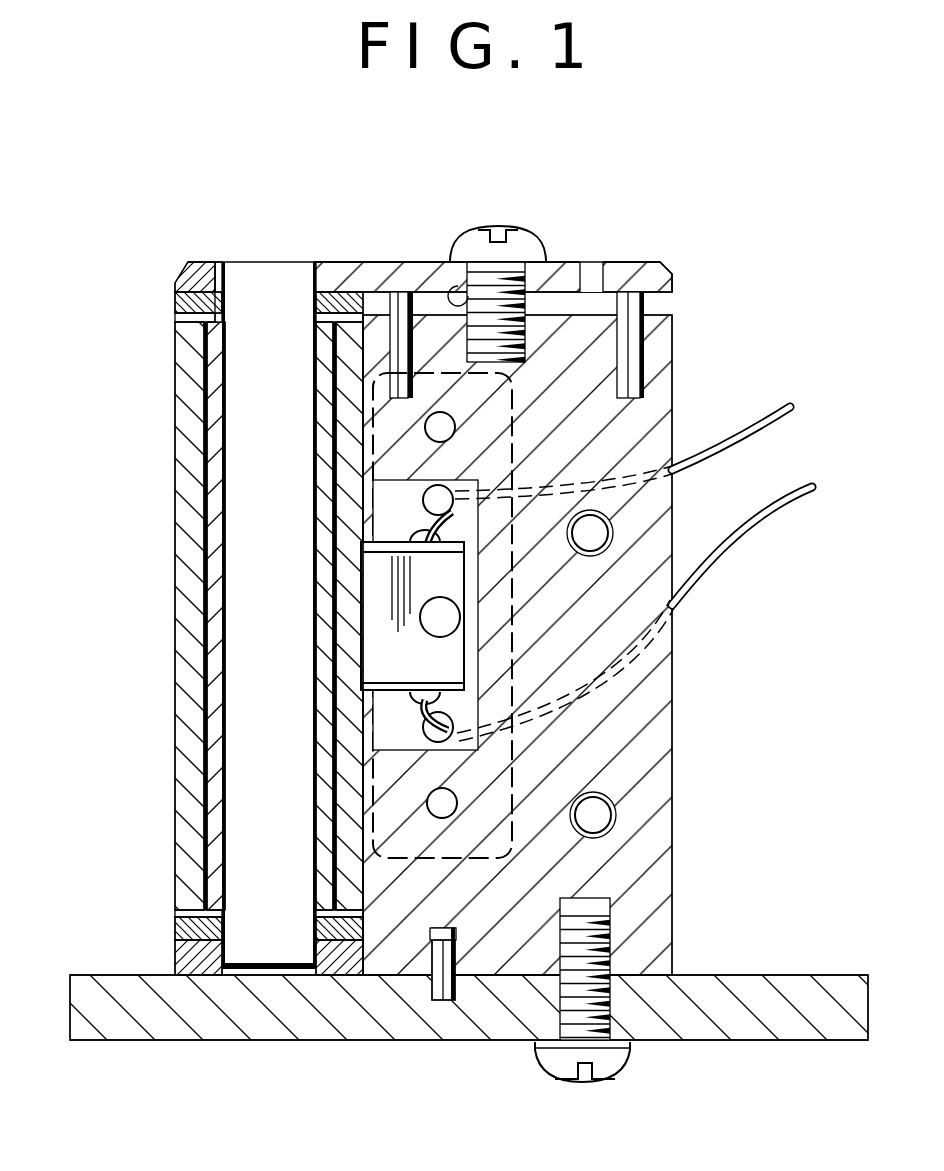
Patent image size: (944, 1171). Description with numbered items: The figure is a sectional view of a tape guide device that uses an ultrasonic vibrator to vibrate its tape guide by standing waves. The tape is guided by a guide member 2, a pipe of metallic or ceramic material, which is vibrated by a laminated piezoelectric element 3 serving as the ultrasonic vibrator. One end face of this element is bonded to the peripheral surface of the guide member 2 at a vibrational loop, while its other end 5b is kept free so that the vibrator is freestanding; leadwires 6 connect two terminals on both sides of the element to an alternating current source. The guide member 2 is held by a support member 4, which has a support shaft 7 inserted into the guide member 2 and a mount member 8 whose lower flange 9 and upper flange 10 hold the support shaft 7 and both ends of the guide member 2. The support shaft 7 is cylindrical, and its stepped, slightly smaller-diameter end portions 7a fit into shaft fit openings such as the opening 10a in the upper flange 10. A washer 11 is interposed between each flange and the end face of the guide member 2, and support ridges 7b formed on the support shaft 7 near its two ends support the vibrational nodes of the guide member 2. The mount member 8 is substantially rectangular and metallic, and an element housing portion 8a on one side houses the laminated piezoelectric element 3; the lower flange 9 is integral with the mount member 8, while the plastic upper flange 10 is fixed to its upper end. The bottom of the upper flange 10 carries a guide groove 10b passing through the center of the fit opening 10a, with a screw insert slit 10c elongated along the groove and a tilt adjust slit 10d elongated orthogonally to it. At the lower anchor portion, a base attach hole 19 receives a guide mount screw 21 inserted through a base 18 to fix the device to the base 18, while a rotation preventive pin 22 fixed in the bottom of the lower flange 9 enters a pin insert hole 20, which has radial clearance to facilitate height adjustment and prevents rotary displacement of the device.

The guide member 2 is at (176, 660).
The laminated piezoelectric element 3 is at (493, 609).
The support member 4 is at (316, 264).
The other end 5b is at (462, 606).
The leadwires 6 is at (734, 437).
The support shaft 7 is at (222, 337).
The tube flange 7a is at (220, 263).
The support ridges 7b is at (205, 417).
The mount member 8 is at (676, 921).
The element housing portion 8a is at (479, 671).
The lower flange 9 is at (338, 962).
The upper flange 10 is at (401, 272).
The shaft fit opening 10a is at (322, 289).
The guide groove 10b is at (673, 292).
The screw insert slit 10c is at (458, 296).
The tilt adjust slit 10d is at (598, 266).
The washer 11 is at (180, 290).
The base 18 is at (800, 995).
The base attach hole 19 is at (603, 980).
The pin insert hole 20 is at (450, 937).
The guide mount screw 21 is at (590, 1083).
The rotation preventive pin 22 is at (441, 993).